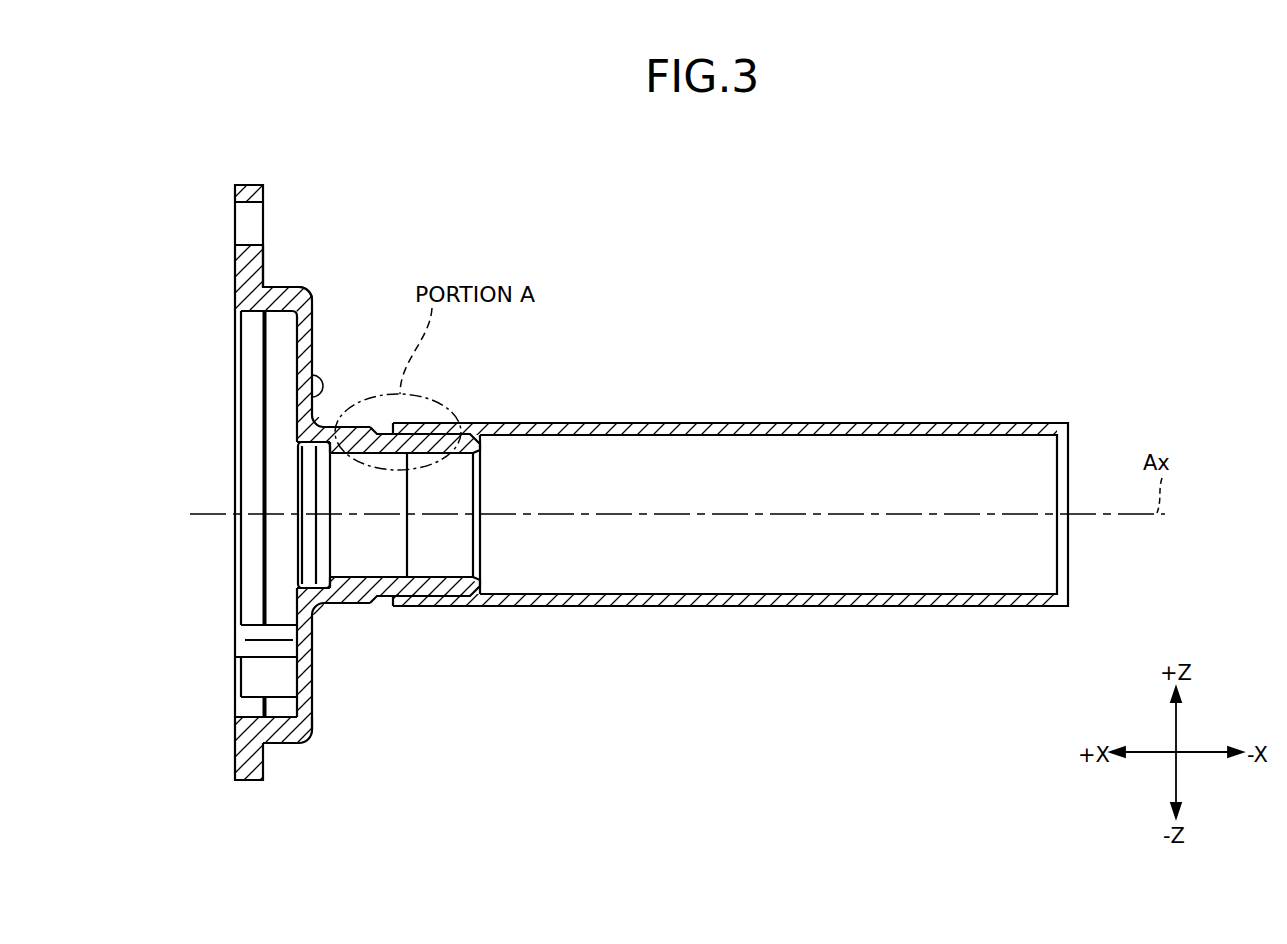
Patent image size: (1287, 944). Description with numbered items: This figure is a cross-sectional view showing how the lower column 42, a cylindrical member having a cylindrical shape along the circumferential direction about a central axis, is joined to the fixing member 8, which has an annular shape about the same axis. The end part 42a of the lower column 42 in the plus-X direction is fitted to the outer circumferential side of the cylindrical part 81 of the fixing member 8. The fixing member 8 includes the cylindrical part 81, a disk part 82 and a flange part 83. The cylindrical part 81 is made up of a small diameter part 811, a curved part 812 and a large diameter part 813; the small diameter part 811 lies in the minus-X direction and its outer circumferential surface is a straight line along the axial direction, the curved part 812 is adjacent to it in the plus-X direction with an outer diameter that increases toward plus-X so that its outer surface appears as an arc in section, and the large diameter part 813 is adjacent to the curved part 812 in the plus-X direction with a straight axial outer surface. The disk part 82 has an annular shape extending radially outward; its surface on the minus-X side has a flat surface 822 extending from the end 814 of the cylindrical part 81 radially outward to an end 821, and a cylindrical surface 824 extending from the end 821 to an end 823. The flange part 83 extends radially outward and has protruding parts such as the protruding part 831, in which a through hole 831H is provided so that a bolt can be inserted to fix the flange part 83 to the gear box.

The fixing member 8 is at (310, 275).
The flange part 83 is at (235, 263).
The protruding part 831 is at (235, 273).
The through hole 831H is at (247, 222).
The disk part 82 is at (302, 352).
The end 821 is at (312, 297).
The flat surface 822 is at (297, 397).
The end 823 is at (265, 290).
The cylindrical surface 824 is at (287, 292).
The cylindrical part 81 is at (537, 700).
The end 814 is at (335, 430).
The large diameter part 813 is at (348, 604).
The curved part 812 is at (375, 596).
The small diameter part 811 is at (460, 606).
The lower column 42 is at (814, 420).
The end part 42a is at (425, 437).